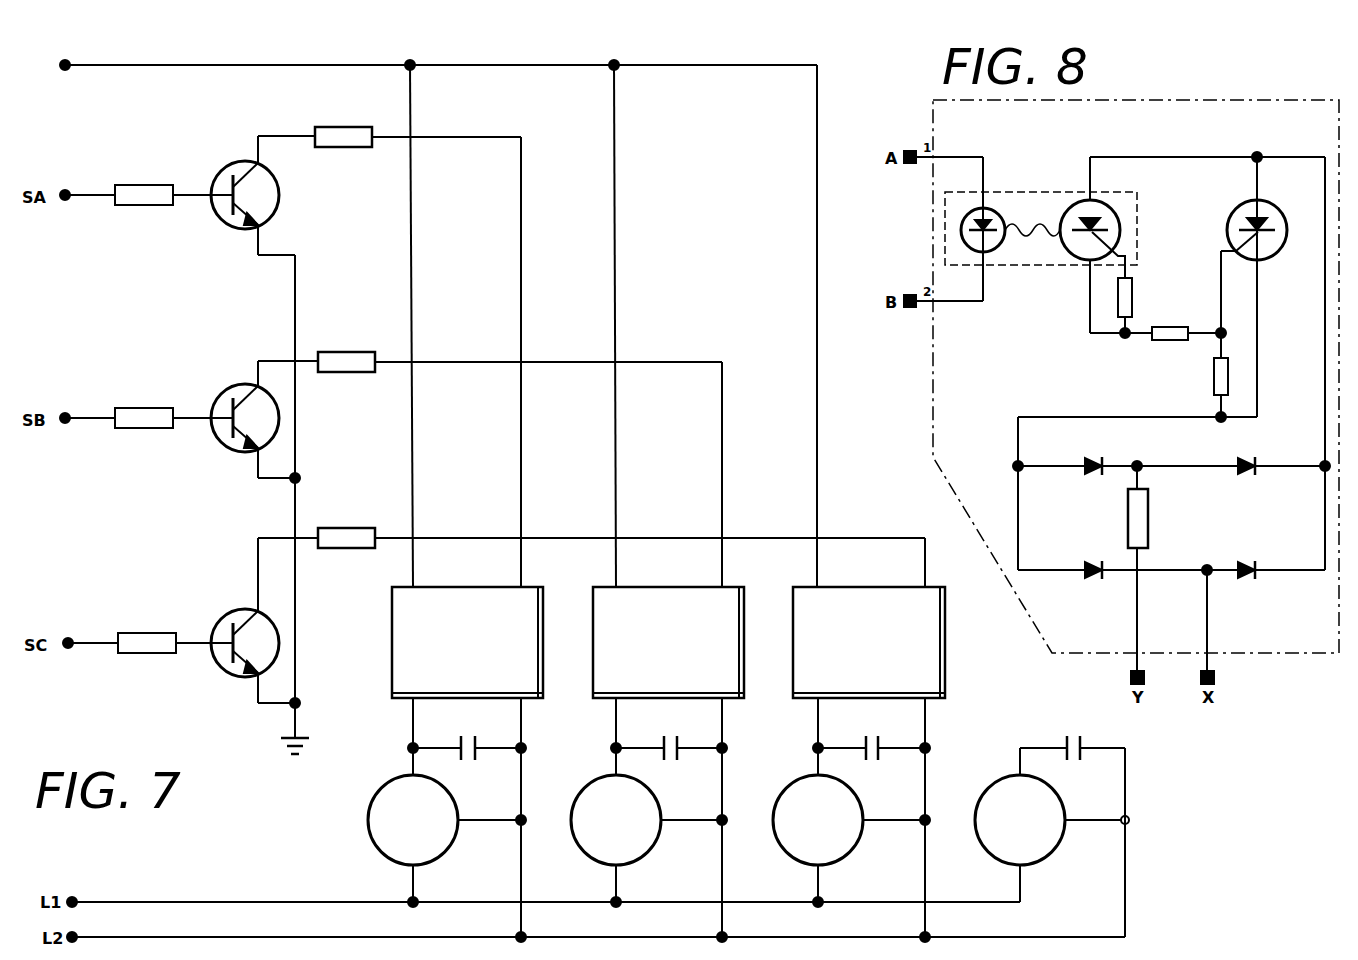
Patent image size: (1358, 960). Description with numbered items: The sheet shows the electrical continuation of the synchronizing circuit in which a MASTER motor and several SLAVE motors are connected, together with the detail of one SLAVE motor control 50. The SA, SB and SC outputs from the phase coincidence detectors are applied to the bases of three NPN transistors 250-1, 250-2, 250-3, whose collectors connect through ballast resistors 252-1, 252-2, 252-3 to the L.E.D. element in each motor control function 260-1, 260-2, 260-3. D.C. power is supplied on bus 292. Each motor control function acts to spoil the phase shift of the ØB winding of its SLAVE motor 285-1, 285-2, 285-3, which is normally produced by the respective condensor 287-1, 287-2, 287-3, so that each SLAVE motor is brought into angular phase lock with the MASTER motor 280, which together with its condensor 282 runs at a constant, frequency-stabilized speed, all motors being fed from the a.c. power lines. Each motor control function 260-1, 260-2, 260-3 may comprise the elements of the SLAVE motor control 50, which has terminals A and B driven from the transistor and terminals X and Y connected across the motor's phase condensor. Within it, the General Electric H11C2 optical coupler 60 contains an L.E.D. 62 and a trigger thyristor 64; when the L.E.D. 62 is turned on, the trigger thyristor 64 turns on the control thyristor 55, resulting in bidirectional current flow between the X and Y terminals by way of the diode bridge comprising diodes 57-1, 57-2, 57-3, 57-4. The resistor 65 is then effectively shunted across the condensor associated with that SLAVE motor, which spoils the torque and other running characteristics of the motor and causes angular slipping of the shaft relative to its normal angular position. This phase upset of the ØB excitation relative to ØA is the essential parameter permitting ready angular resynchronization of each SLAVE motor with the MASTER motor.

In FIG. 7, the NPN transistor 250-1 is at (279, 203).
In FIG. 7, the NPN transistor 250-2 is at (228, 398).
In FIG. 7, the NPN transistor 250-3 is at (222, 620).
In FIG. 7, the ballast resistor 252-1 is at (340, 133).
In FIG. 7, the ballast resistor 252-2 is at (345, 357).
In FIG. 7, the ballast resistor 252-3 is at (357, 510).
In FIG. 7, the motor control function 260-1 is at (400, 662).
In FIG. 7, the motor control function 260-2 is at (668, 600).
In FIG. 7, the motor control function 260-3 is at (858, 600).
In FIG. 7, the SLAVE motor 285-1 is at (388, 793).
In FIG. 7, the SLAVE motor 285-2 is at (591, 793).
In FIG. 7, the SLAVE motor 285-3 is at (793, 793).
In FIG. 7, the condensor 287-1 is at (462, 742).
In FIG. 7, the condensor 287-2 is at (663, 742).
In FIG. 7, the condensor 287-3 is at (866, 742).
In FIG. 7, the MASTER motor 280 is at (997, 790).
In FIG. 7, the condensor 282 is at (1067, 738).
In FIG. 7, the D.C. power bus 292 is at (726, 65).
In FIG. 8, the SLAVE motor control 50 is at (1222, 118).
In FIG. 8, the optical coupler 60 is at (1059, 237).
In FIG. 8, the L.E.D. 62 is at (993, 248).
In FIG. 8, the trigger thyristor 64 is at (1113, 244).
In FIG. 8, the control thyristor 55 is at (1231, 221).
In FIG. 8, the diode 57-1 is at (1085, 461).
In FIG. 8, the diode 57-2 is at (1257, 461).
In FIG. 8, the diode 57-3 is at (1085, 565).
In FIG. 8, the diode 57-4 is at (1275, 546).
In FIG. 8, the resistor 65 is at (1140, 520).